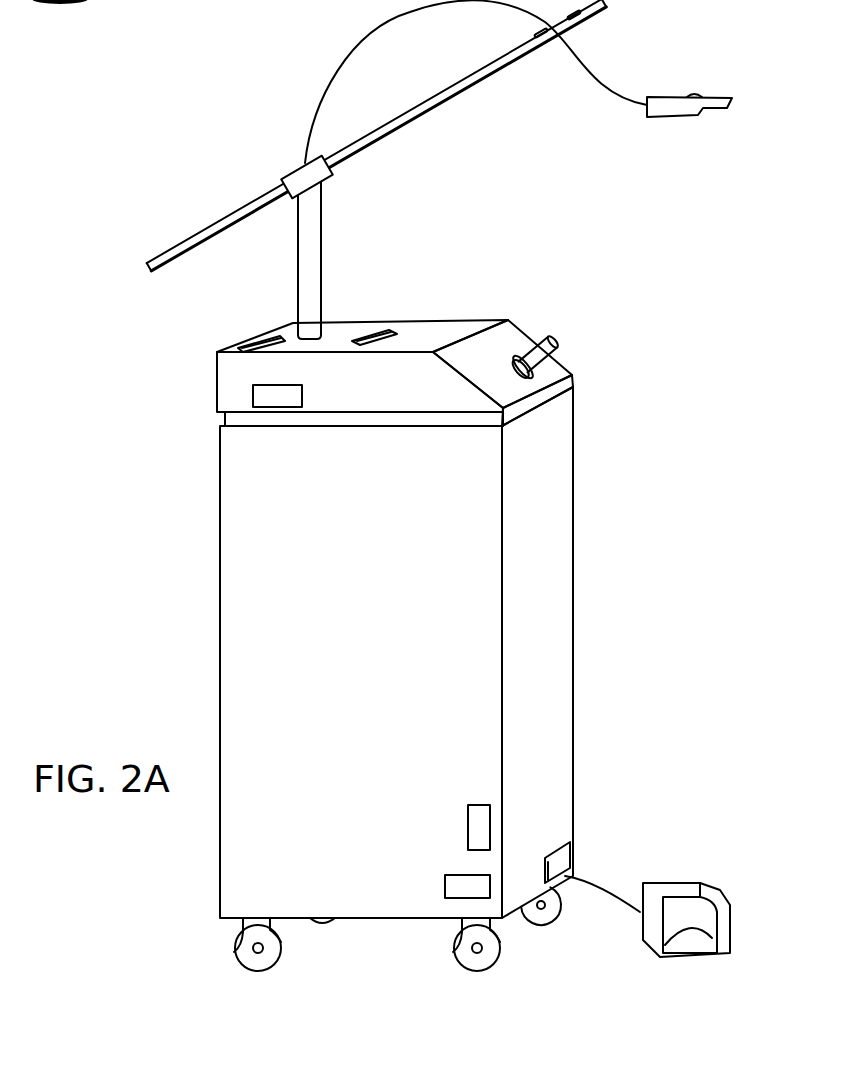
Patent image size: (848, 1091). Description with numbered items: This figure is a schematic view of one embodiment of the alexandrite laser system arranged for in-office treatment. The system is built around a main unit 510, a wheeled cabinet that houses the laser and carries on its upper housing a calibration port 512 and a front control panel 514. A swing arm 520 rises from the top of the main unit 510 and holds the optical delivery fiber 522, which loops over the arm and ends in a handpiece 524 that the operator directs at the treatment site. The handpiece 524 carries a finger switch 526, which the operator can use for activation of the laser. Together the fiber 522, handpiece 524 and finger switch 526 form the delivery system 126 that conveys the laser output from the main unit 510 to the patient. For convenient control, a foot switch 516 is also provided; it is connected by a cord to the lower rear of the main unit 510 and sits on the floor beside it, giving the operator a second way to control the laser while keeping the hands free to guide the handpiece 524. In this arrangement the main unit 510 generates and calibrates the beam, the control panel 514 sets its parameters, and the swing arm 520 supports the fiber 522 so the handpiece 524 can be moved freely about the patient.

The delivery system 126 is at (706, 94).
The main unit 510 is at (442, 629).
The calibration port 512 is at (560, 343).
The front control panel 514 is at (441, 357).
The foot pedal 516 is at (677, 882).
The support rod 520 is at (413, 116).
The optical delivery fiber 522 is at (325, 88).
The handpiece 524 is at (673, 118).
The finger switch 526 is at (693, 97).